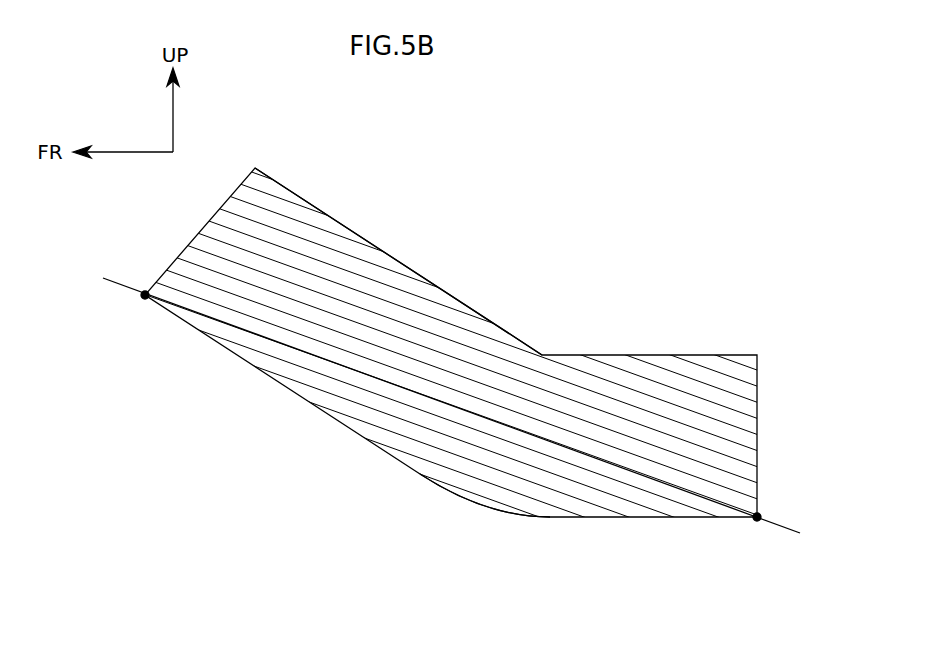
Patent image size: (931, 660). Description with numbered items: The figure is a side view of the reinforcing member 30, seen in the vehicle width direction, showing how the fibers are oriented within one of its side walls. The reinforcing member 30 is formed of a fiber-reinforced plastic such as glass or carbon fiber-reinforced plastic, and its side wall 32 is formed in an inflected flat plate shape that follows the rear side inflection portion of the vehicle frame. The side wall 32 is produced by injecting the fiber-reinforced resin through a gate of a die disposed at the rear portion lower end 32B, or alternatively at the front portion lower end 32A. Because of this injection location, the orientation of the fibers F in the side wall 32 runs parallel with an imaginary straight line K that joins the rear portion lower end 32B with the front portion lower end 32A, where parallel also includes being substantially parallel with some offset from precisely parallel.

The reinforcing member 30 is at (607, 328).
The side wall 32 is at (447, 292).
The front portion lower end 32A is at (145, 299).
The rear portion lower end 32B is at (757, 521).
The imaginary straight line K is at (116, 282).
The fibers F is at (468, 463).